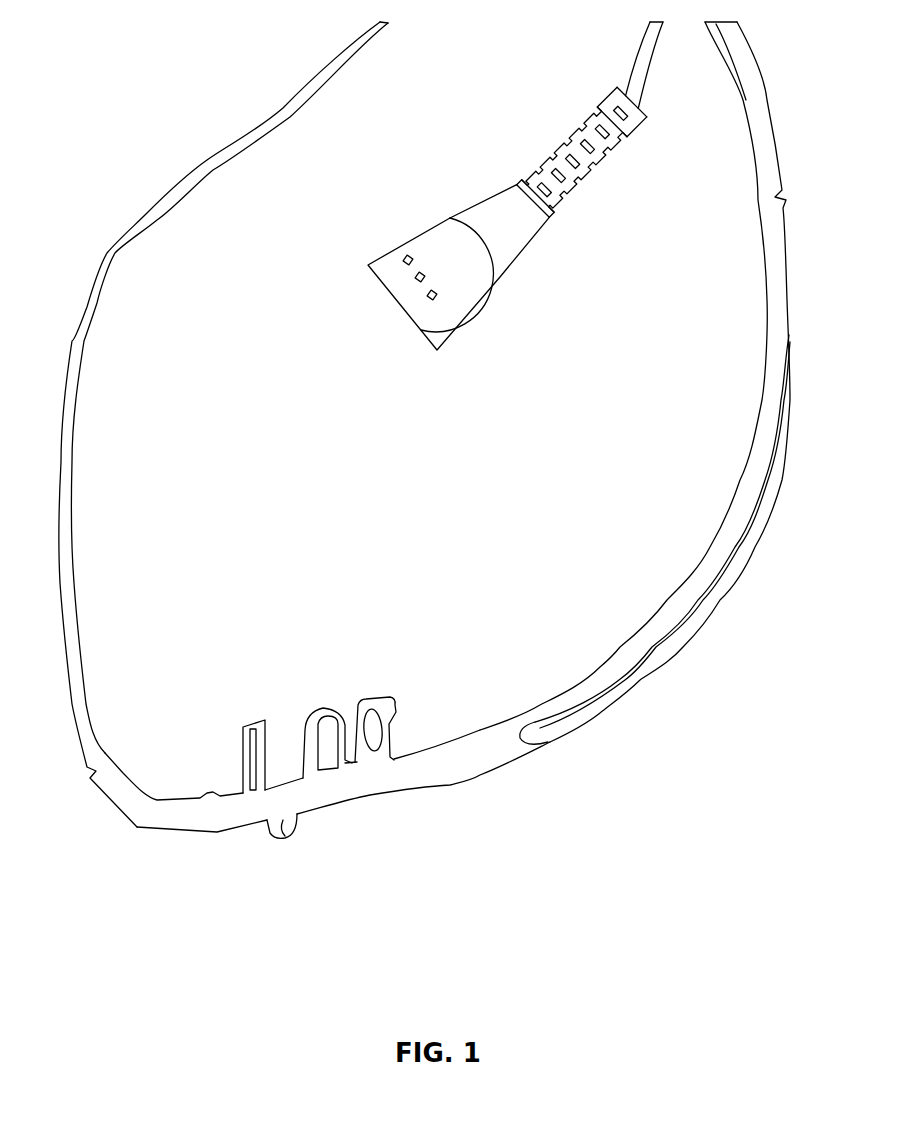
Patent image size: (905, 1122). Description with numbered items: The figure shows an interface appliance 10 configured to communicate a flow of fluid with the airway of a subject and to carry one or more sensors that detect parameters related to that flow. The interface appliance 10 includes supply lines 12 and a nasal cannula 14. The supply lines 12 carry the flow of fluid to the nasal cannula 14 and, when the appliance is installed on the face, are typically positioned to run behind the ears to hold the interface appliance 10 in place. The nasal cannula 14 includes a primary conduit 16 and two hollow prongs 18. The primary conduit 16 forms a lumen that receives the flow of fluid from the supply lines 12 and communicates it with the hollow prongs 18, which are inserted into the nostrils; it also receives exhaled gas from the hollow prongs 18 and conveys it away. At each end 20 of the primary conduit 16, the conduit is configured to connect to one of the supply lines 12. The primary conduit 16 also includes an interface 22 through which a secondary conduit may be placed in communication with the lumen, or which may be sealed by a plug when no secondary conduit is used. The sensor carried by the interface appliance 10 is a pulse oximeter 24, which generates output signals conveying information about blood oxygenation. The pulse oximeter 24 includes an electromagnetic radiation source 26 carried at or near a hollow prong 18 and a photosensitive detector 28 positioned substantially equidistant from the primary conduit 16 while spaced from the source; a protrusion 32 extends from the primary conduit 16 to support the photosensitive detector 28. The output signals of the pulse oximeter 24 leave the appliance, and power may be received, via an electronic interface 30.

The interface appliance 10 is at (423, 474).
The supply line 12 is at (76, 585).
The nasal cannula 14 is at (228, 828).
The primary conduit 16 is at (330, 785).
The hollow prong 18 is at (313, 723).
The end 20 is at (92, 778).
The interface 22 is at (280, 838).
The pulse oximeter 24 is at (388, 705).
The electromagnetic radiation source 26 is at (325, 712).
The photosensitive detector 28 is at (414, 697).
The electronic interface 30 is at (410, 297).
The protrusion 32 is at (380, 730).